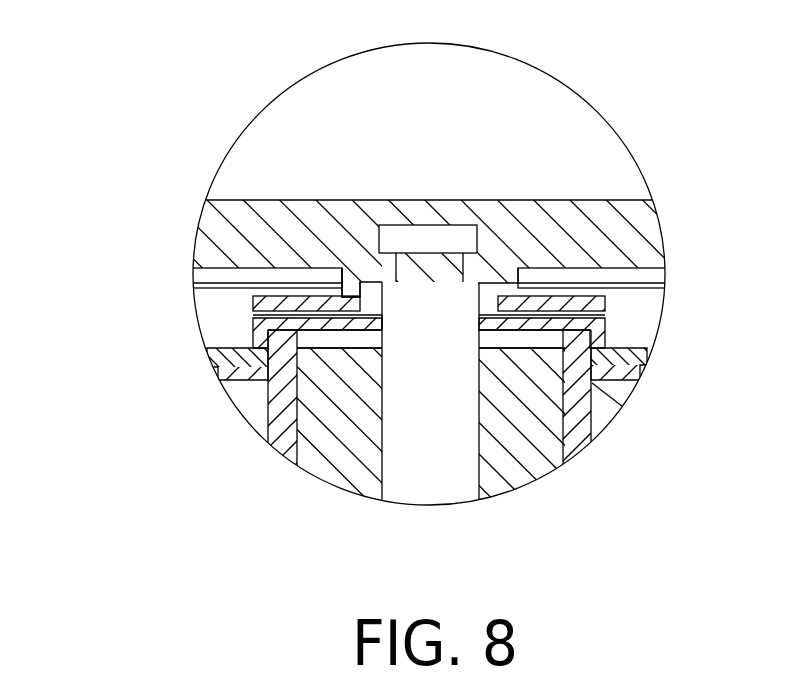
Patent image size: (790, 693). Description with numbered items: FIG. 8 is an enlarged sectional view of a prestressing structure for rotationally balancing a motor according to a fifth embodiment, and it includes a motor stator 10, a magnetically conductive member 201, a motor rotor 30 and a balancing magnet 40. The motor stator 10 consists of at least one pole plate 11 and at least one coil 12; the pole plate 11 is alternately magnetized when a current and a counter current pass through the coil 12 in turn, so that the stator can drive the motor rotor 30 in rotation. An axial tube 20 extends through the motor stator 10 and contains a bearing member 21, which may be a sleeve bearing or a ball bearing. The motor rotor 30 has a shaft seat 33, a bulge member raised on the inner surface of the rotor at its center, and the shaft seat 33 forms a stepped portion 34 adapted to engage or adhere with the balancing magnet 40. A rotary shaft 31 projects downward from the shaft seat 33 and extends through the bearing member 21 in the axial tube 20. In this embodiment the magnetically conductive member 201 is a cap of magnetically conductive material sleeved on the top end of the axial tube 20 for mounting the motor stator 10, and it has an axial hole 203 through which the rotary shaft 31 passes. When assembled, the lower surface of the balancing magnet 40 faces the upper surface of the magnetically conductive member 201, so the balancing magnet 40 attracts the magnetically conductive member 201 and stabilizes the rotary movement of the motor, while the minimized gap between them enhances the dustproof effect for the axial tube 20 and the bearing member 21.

The motor stator 10 is at (425, 436).
The pole plate 11 is at (213, 360).
The coil 12 is at (260, 418).
The axial tube 20 is at (287, 430).
The bearing member 21 is at (333, 445).
The magnetically conductive member 201 is at (253, 320).
The axial hole 203 is at (487, 290).
The motor rotor 30 is at (566, 181).
The rotary shaft 31 is at (447, 310).
The shaft seat 33 is at (368, 287).
The stepped portion 34 is at (360, 292).
The balancing magnet 40 is at (283, 289).